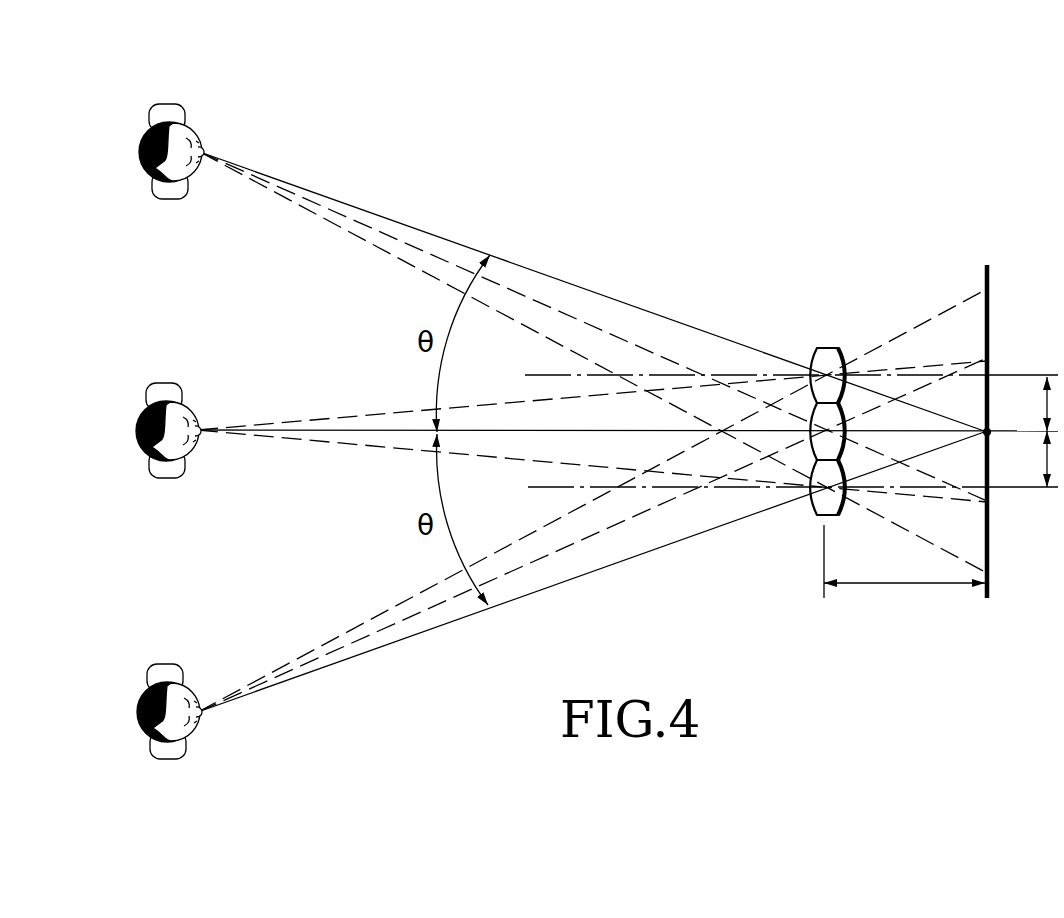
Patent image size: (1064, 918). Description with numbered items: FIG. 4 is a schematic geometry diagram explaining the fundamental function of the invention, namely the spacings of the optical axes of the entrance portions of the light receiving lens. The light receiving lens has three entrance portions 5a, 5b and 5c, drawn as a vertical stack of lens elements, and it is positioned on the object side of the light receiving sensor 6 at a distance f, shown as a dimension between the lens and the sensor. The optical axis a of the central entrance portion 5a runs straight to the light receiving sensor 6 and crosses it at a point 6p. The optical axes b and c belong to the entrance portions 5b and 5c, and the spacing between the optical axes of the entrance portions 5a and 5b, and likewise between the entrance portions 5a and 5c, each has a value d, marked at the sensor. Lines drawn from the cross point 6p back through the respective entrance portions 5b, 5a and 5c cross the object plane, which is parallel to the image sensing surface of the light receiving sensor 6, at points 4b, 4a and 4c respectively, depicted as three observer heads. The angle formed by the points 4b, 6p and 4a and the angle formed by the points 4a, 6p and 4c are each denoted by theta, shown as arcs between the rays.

The cross point on object plane 4a is at (185, 394).
The cross point on object plane 4b is at (188, 114).
The cross point on object plane 4c is at (181, 673).
The central entrance portion 5a is at (818, 465).
The entrance portion 5b is at (822, 353).
The entrance portion 5c is at (822, 505).
The light receiving sensor 6 is at (989, 398).
The cross point 6p is at (989, 436).
The optical axis of central entrance portion a is at (606, 430).
The optical axis of entrance portion b is at (550, 373).
The optical axis of entrance portion c is at (662, 488).
The spacing between optical axes d is at (1055, 432).
The distance between lens and sensor f is at (904, 570).